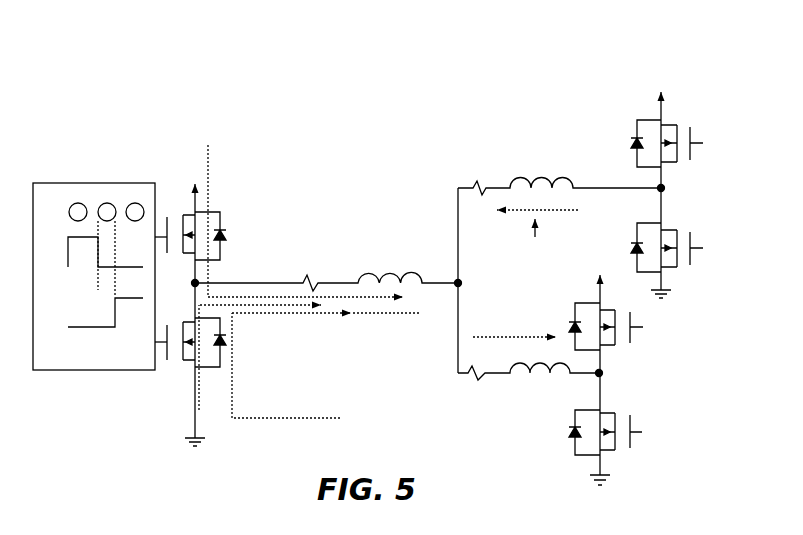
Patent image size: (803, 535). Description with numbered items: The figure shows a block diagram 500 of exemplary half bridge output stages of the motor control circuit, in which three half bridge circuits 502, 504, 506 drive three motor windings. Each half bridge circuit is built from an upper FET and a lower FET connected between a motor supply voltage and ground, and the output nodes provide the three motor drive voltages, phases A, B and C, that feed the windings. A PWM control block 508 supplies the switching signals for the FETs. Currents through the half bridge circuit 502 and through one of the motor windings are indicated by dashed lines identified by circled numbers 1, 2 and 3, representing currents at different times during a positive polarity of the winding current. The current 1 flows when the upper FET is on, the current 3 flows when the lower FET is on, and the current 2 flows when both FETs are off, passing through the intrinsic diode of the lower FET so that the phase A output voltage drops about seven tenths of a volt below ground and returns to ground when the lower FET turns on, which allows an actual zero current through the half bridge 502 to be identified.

The multi-phase power converter circuit 500 is at (354, 116).
The half bridge circuit 502 is at (225, 206).
The half bridge circuit 504 is at (695, 120).
The half bridge circuit 506 is at (640, 360).
The PWM control circuit 508 is at (75, 183).
The current 1 is at (208, 211).
The current 2 is at (296, 370).
The current 3 is at (203, 413).